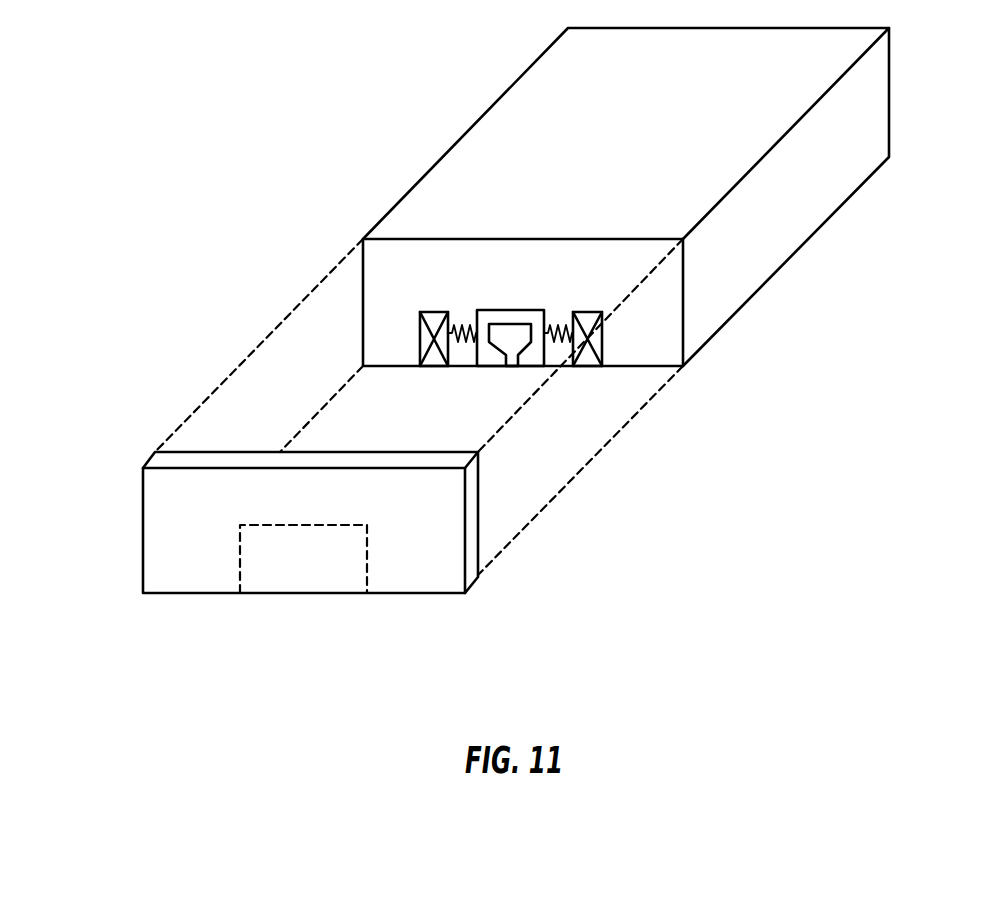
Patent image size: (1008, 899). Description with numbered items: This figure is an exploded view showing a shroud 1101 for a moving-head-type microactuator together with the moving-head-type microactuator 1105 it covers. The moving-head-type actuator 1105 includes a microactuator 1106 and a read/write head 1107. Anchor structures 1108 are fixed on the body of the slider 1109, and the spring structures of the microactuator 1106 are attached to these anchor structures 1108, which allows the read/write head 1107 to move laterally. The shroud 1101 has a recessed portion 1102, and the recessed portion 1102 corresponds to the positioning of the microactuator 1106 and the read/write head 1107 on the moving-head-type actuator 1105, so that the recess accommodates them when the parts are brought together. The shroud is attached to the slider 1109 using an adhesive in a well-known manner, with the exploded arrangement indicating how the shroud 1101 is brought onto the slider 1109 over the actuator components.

The shroud 1101 is at (162, 525).
The recessed portion 1102 is at (297, 583).
The moving-head-type microactuator 1105 is at (627, 415).
The microactuator 1106 is at (546, 366).
The read/write head 1107 is at (514, 366).
The anchor structures 1108 is at (437, 366).
The slider 1109 is at (778, 245).